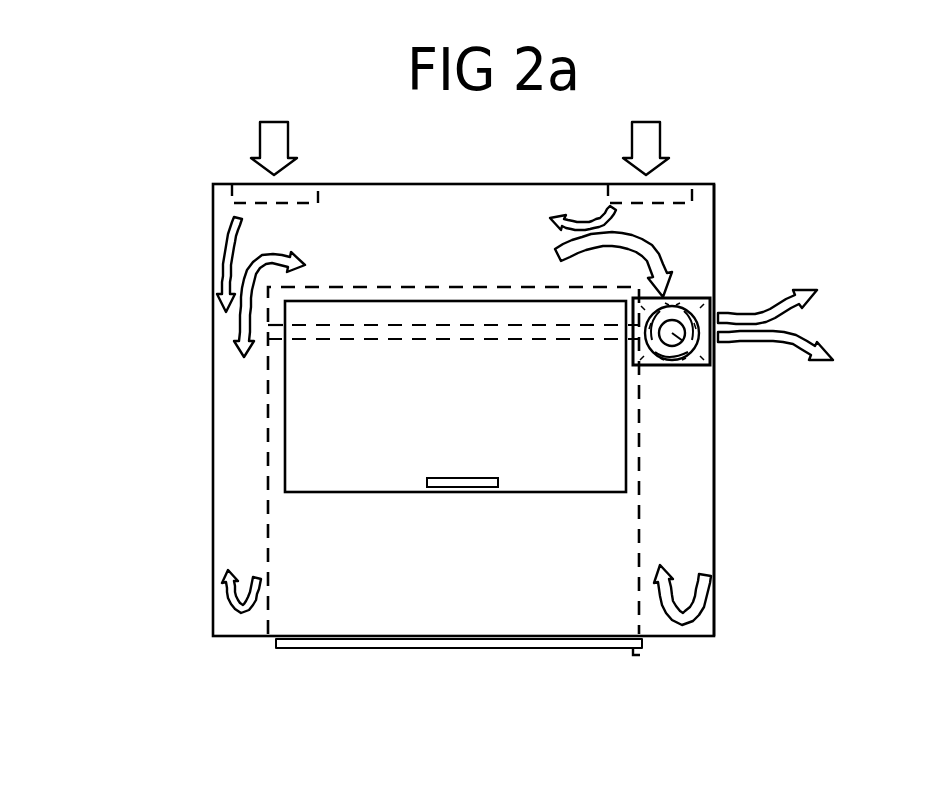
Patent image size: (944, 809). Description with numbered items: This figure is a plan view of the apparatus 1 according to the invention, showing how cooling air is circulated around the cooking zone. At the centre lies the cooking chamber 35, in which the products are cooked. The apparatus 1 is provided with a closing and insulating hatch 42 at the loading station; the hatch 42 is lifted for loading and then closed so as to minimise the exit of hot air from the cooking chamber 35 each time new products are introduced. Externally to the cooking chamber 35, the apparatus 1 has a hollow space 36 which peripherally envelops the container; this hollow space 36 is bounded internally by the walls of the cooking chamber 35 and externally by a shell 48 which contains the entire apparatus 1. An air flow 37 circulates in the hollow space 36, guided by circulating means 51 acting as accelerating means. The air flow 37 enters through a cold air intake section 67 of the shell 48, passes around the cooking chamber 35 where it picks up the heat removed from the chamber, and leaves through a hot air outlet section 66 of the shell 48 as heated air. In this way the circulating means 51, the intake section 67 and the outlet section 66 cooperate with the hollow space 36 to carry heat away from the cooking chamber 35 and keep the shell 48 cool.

The apparatus 1 is at (185, 464).
The cooking chamber 35 is at (313, 408).
The hollow space 36 is at (235, 527).
The air flow 37 is at (230, 230).
The closing and insulating hatch 42 is at (373, 468).
The shell 48 is at (717, 473).
The circulating means 51 is at (268, 130).
The hot air outlet section 66 is at (712, 353).
The cold air intake section 67 is at (243, 188).